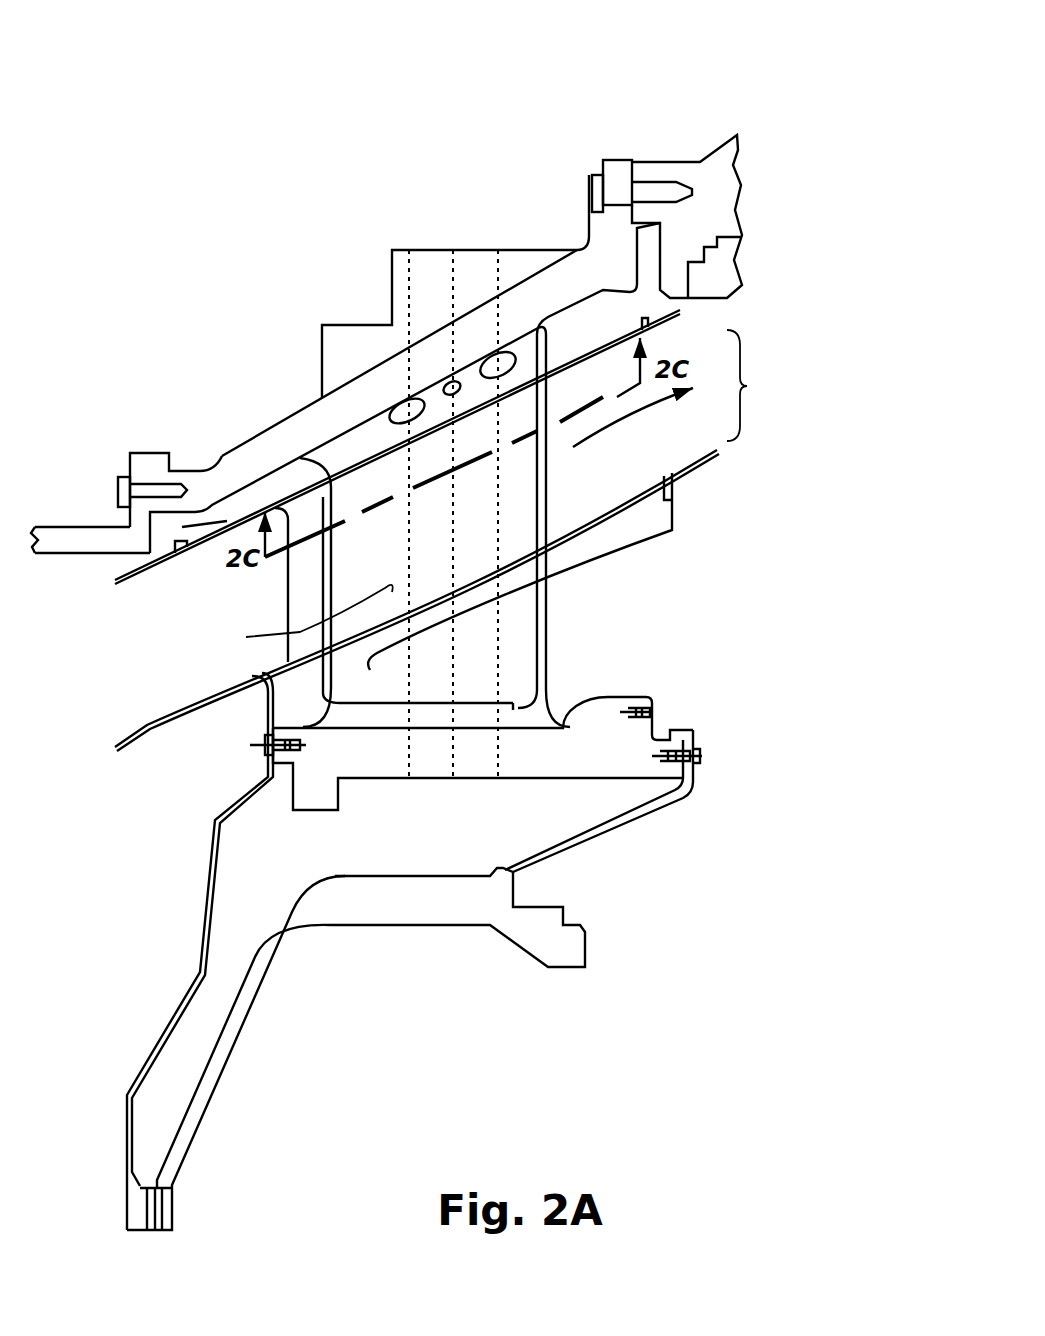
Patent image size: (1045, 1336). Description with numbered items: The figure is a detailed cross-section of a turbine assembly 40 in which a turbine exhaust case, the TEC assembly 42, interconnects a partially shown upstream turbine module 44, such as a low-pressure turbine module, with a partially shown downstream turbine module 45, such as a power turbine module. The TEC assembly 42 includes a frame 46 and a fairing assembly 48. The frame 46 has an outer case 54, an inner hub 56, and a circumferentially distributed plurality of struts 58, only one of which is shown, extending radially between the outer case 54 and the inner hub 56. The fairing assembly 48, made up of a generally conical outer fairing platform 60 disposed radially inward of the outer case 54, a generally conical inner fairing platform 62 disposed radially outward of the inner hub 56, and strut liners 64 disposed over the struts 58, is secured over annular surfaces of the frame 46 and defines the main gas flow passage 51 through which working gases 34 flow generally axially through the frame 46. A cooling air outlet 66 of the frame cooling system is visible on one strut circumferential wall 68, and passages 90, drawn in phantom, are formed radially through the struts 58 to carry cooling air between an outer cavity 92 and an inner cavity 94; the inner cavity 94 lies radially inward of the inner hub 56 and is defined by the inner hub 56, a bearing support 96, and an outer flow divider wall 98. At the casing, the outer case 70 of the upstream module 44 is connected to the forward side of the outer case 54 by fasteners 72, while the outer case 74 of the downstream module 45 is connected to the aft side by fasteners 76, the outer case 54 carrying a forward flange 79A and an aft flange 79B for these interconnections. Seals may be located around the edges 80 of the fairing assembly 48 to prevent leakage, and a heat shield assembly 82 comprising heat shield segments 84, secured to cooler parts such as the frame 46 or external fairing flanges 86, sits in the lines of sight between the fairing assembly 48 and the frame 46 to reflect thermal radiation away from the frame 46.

The working gases 34 is at (648, 410).
The turbine assembly 40 is at (797, 86).
The TEC assembly 42 is at (351, 302).
The upstream turbine module 44 is at (90, 498).
The downstream turbine module 45 is at (705, 178).
The frame 46 is at (298, 380).
The fairing assembly 48 is at (233, 700).
The main gas flow passage 51 is at (749, 385).
The outer case 54 is at (220, 468).
The inner hub 56 is at (300, 795).
The struts 58 is at (416, 681).
The outer fairing platform 60 is at (173, 554).
The inner fairing platform 62 is at (183, 703).
The strut liners 64 is at (288, 597).
The cooling air outlet 66 is at (494, 355).
The strut circumferential wall 68 is at (303, 615).
The outer case 70 is at (67, 543).
The fasteners 72 is at (118, 490).
The outer case 74 is at (712, 198).
The fasteners 76 is at (592, 185).
The forward flange 79A is at (162, 452).
The aft flange 79B is at (620, 160).
The edges 80 is at (690, 311).
The heat shield assembly 82 is at (657, 545).
The heat shield segments 84 is at (603, 332).
The external fairing flanges 86 is at (672, 492).
The passages 90 is at (436, 792).
The outer cavity 92 is at (432, 143).
The inner cavity 94 is at (306, 853).
The bearing support 96 is at (578, 848).
The outer flow divider wall 98 is at (186, 967).